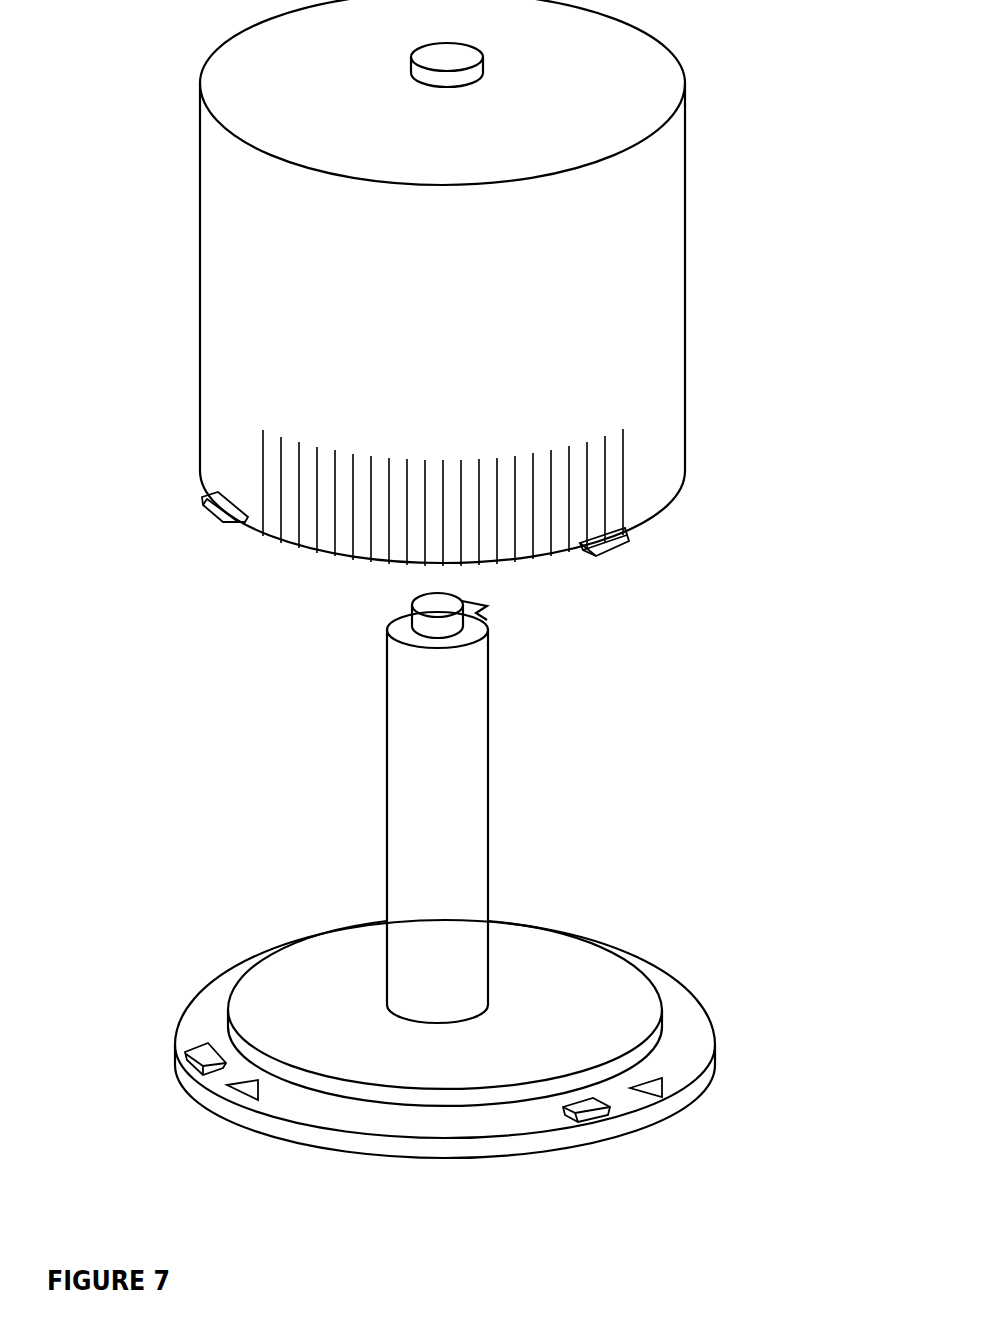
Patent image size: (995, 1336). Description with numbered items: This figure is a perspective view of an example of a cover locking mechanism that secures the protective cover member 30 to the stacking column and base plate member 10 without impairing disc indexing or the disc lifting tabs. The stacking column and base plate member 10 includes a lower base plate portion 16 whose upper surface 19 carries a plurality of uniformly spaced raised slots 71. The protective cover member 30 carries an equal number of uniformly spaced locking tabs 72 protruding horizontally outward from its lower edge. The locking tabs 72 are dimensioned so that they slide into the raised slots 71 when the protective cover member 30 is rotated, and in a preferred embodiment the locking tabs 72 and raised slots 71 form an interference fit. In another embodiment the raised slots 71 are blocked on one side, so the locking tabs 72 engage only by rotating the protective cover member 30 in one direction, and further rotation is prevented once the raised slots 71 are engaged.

The protective cover member 30 is at (697, 178).
The locking tabs 72 is at (622, 555).
The upper surface 19 is at (672, 1023).
The stacking column and base plate member 10 is at (483, 1162).
The lower base plate portion 16 is at (326, 1130).
The raised slots 71 is at (595, 1118).